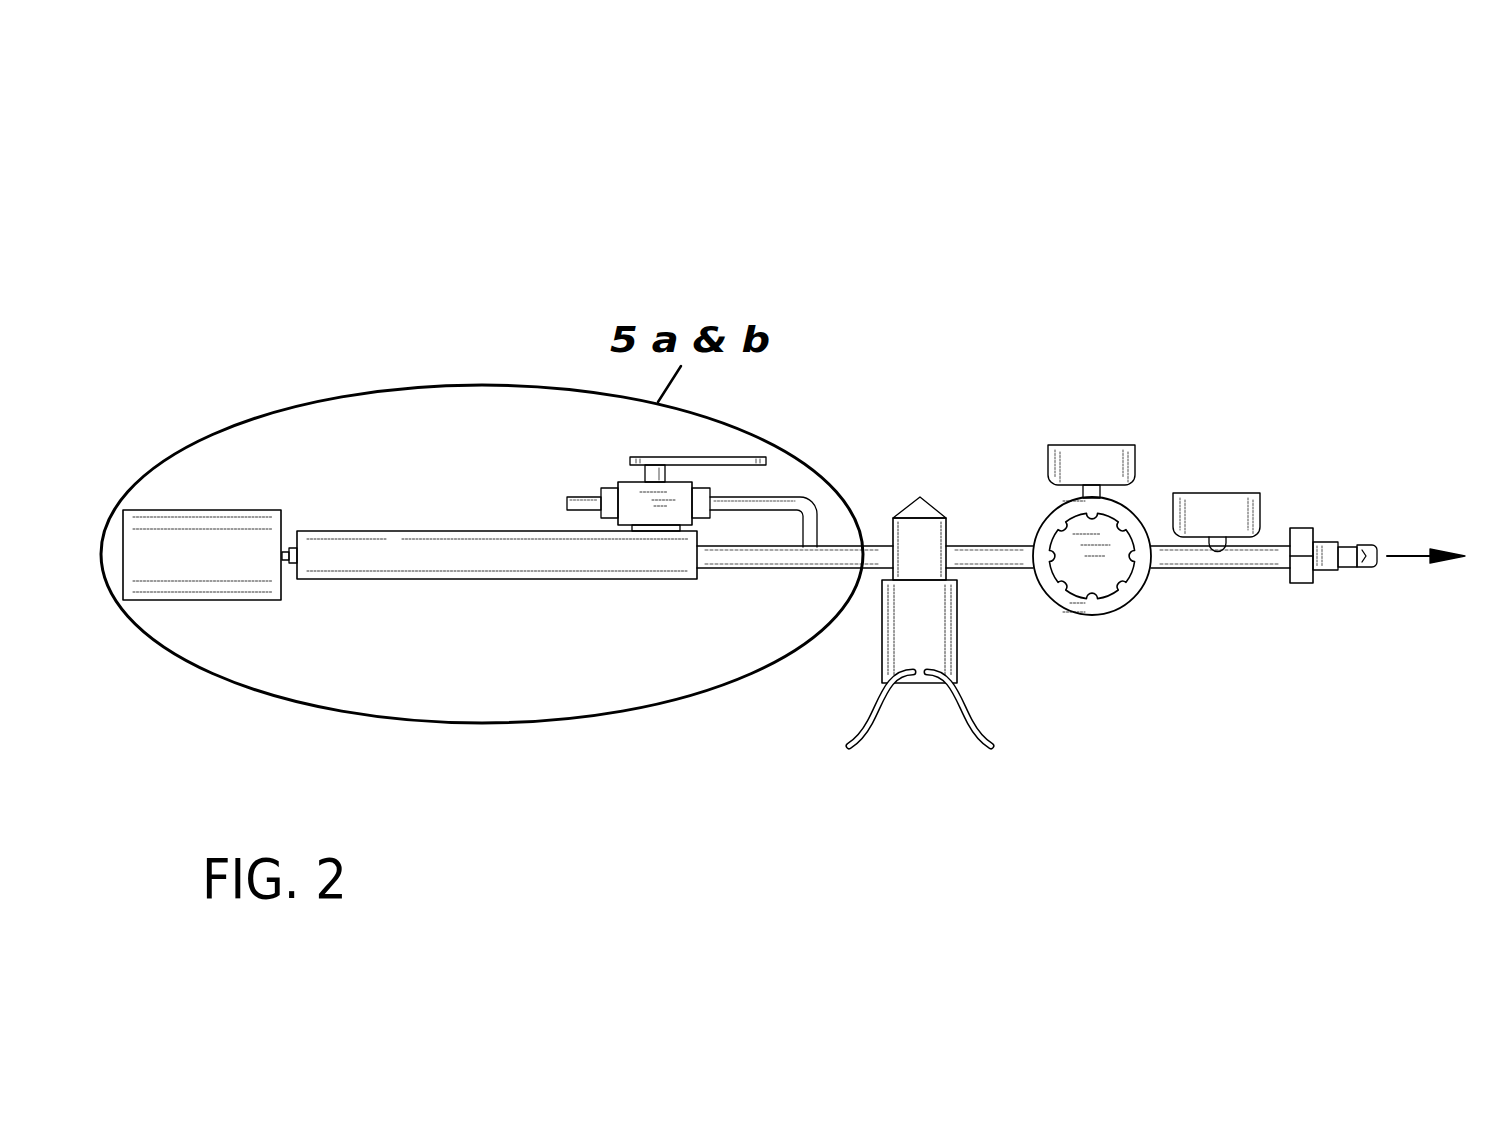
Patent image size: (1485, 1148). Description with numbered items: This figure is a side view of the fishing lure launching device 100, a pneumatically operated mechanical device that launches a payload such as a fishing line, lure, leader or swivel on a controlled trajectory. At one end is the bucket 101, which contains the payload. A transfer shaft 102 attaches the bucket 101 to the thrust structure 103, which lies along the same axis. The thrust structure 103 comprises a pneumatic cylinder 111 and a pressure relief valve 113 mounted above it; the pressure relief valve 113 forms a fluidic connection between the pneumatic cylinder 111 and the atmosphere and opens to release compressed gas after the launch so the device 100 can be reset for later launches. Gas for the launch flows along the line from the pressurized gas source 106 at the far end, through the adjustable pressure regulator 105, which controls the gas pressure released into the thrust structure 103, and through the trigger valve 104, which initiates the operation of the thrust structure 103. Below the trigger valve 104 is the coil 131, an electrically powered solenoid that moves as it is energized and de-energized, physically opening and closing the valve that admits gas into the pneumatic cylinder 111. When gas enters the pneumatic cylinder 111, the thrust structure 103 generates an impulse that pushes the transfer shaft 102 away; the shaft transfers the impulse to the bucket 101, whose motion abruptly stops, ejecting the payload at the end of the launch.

The fishing lure launching device 100 is at (165, 218).
The bucket 101 is at (218, 521).
The transfer shaft 102 is at (284, 562).
The thrust structure 103 is at (371, 521).
The pneumatic cylinder 111 is at (505, 562).
The pressure relief valve 113 is at (686, 488).
The trigger valve 104 is at (942, 612).
The coil 131 is at (878, 745).
The adjustable pressure regulator 105 is at (1117, 615).
The pressurized gas source 106 is at (1379, 538).